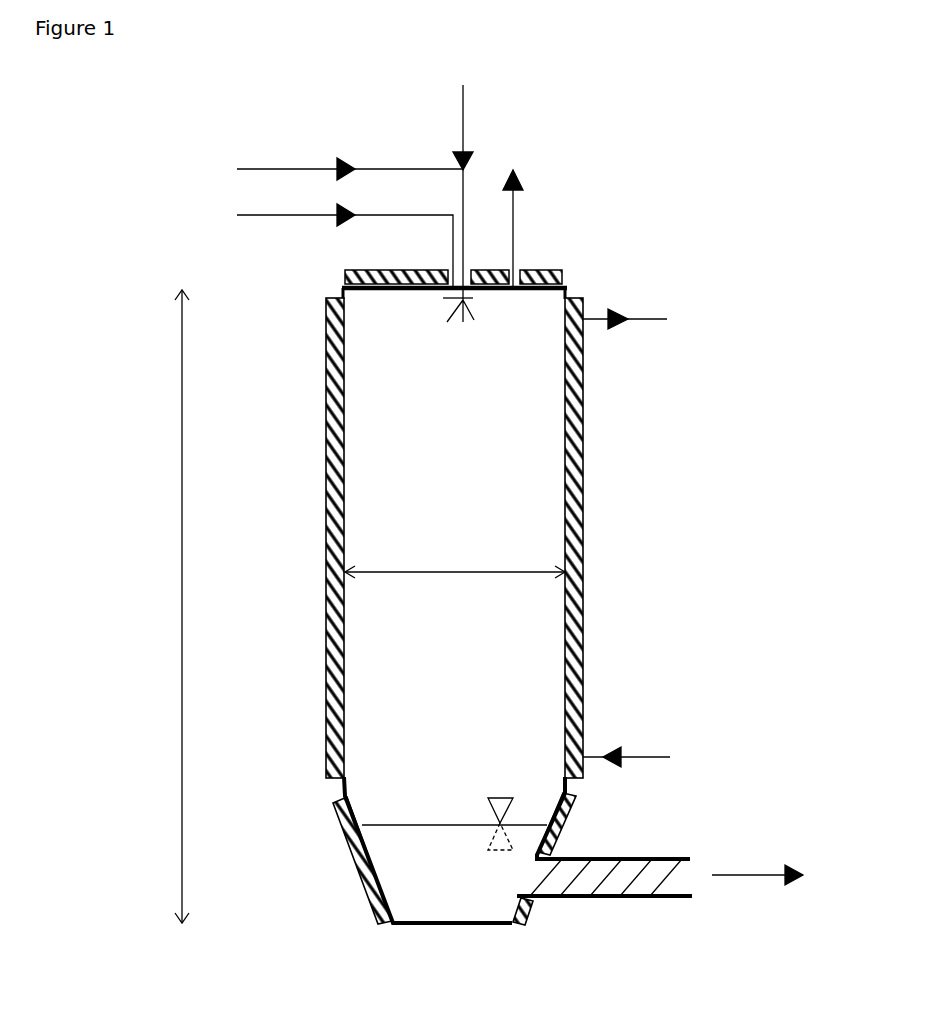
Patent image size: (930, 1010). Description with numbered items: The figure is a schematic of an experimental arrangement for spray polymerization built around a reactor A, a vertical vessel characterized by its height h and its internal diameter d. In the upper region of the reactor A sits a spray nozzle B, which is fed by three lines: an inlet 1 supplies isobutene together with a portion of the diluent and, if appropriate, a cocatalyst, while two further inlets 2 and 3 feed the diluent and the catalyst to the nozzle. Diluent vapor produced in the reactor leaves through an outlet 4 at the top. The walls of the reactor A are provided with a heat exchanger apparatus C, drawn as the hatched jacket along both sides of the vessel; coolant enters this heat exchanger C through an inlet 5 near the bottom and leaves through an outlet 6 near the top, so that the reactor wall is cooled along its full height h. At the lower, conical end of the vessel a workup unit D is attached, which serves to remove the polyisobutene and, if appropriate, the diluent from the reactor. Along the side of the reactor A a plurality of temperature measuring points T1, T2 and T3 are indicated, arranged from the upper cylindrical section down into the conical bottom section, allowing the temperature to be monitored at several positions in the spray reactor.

The inlet 1 is at (345, 246).
The inlet 2 is at (350, 154).
The inlet 3 is at (451, 192).
The outlet 4 is at (529, 229).
The inlet 5 is at (626, 739).
The outlet 6 is at (625, 342).
The reactor A is at (403, 477).
The spray nozzle B is at (438, 322).
The heat exchanger apparatus C is at (583, 612).
The workup unit D is at (625, 859).
The temperature measuring point T1 is at (385, 377).
The temperature measuring point T2 is at (382, 805).
The temperature measuring point T3 is at (393, 842).
The height h is at (197, 606).
The internal diameter d is at (455, 548).